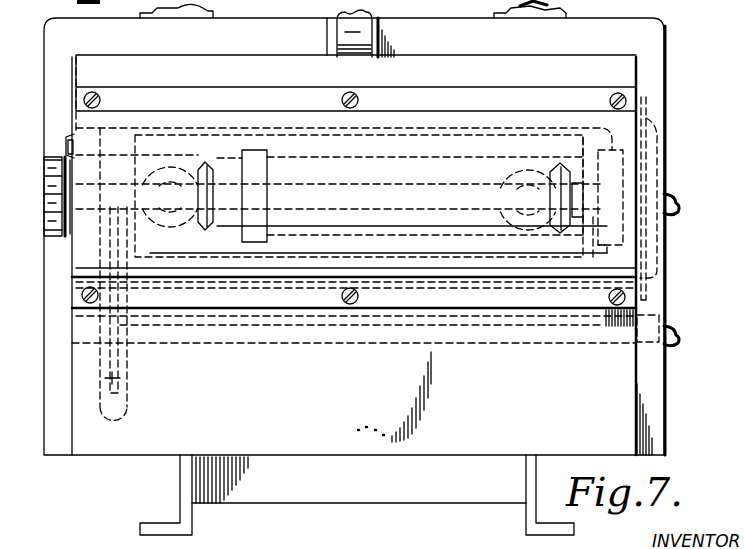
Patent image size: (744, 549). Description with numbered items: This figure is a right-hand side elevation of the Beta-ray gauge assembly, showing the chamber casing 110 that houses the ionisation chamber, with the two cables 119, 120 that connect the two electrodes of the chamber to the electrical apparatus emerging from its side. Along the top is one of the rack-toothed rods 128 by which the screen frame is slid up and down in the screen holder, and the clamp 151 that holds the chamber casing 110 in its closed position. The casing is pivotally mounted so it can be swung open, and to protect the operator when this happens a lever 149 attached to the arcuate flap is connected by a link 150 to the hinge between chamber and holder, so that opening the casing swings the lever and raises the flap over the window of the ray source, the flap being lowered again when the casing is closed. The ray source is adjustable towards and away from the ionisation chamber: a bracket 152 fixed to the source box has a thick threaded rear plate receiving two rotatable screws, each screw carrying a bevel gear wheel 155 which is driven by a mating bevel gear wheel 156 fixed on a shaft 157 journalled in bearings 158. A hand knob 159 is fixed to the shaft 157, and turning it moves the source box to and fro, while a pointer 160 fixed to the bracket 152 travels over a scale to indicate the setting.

The chamber casing 110 is at (648, 68).
The cable 119 is at (672, 197).
The cable 120 is at (672, 332).
The rod 128 is at (206, 13).
The lever 149 is at (122, 355).
The link 150 is at (120, 378).
The clamp 151 is at (362, 32).
The bracket 152 is at (415, 157).
The bevel gear wheel 155 is at (150, 230).
The bevel gear wheel 156 is at (218, 152).
The shaft 157 is at (338, 184).
The bearing 158 is at (267, 152).
The hand knob 159 is at (72, 196).
The pointer 160 is at (92, 135).